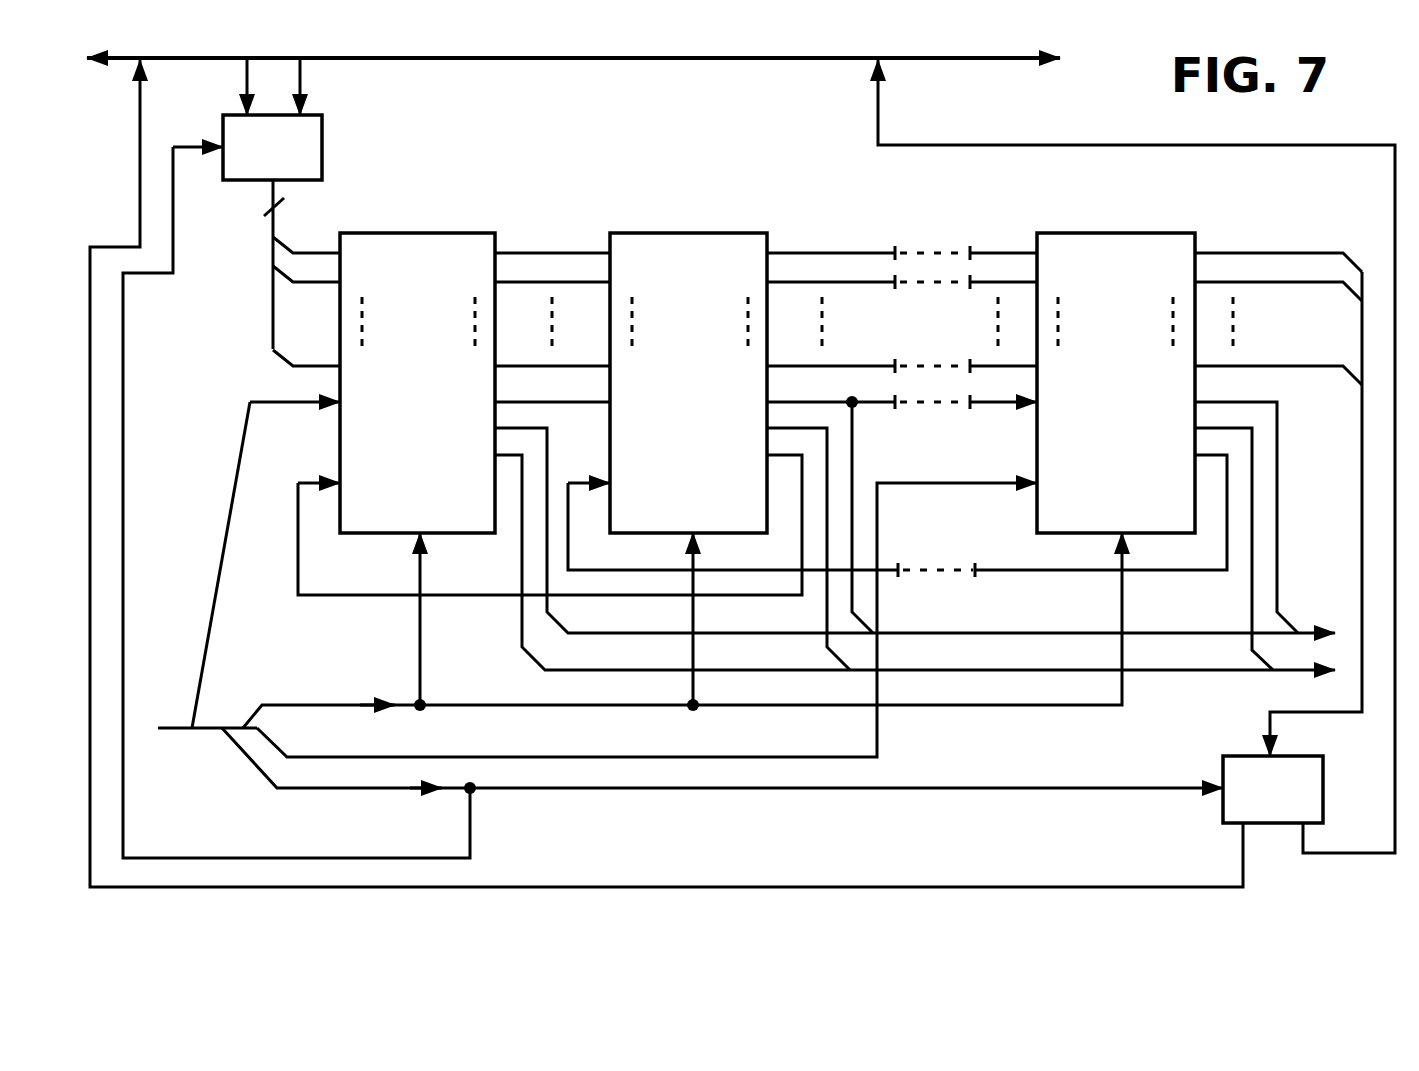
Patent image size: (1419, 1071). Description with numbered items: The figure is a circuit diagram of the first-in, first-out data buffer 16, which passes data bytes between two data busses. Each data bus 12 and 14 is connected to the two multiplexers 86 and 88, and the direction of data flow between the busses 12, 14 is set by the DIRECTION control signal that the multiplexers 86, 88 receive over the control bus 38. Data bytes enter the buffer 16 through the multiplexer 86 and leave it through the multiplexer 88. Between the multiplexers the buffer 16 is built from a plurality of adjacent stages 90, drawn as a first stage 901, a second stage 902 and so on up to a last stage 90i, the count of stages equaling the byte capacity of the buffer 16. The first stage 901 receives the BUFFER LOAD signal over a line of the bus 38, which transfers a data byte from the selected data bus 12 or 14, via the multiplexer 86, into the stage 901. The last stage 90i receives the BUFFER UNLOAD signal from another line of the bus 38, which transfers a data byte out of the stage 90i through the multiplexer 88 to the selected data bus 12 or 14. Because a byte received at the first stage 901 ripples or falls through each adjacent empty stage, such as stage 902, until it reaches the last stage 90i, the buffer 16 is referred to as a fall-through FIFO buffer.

The data bus 12 is at (128, 60).
The data bus 14 is at (963, 58).
The buffer 16 is at (1283, 882).
The bus 38 is at (272, 402).
The multiplexer 86 is at (350, 150).
The multiplexer 88 is at (1223, 768).
The stages 90 is at (830, 471).
The first stage 901 is at (418, 233).
The second stage 902 is at (690, 233).
The last stage 90i is at (1115, 232).